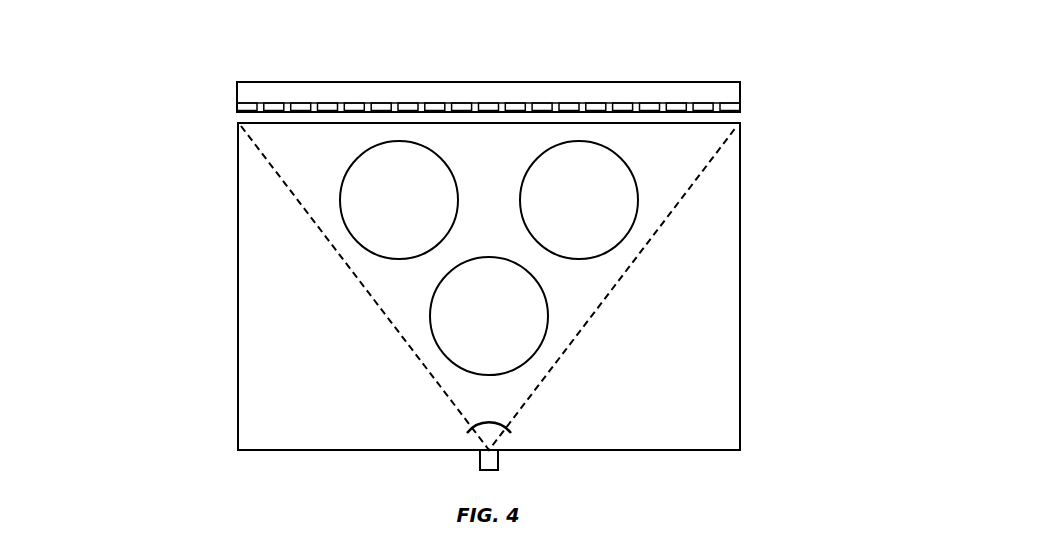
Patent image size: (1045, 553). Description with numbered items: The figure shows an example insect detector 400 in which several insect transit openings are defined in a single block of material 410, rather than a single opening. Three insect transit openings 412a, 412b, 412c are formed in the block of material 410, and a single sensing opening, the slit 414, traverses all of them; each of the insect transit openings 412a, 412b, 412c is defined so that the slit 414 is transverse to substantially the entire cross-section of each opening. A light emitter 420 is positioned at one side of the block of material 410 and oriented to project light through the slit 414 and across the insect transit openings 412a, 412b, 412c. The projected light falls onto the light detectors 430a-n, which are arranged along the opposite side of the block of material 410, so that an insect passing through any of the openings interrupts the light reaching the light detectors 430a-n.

The insect detector 400 is at (132, 105).
The light detectors 430a-n is at (740, 106).
The block of material 410 is at (238, 285).
The insect transit opening 412a is at (675, 188).
The insect transit opening 412b is at (584, 308).
The insect transit opening 412c is at (286, 184).
The slit 414 is at (578, 340).
The light emitter 420 is at (480, 462).